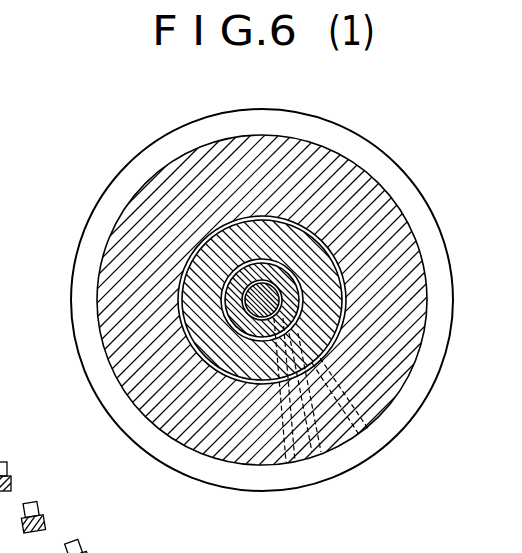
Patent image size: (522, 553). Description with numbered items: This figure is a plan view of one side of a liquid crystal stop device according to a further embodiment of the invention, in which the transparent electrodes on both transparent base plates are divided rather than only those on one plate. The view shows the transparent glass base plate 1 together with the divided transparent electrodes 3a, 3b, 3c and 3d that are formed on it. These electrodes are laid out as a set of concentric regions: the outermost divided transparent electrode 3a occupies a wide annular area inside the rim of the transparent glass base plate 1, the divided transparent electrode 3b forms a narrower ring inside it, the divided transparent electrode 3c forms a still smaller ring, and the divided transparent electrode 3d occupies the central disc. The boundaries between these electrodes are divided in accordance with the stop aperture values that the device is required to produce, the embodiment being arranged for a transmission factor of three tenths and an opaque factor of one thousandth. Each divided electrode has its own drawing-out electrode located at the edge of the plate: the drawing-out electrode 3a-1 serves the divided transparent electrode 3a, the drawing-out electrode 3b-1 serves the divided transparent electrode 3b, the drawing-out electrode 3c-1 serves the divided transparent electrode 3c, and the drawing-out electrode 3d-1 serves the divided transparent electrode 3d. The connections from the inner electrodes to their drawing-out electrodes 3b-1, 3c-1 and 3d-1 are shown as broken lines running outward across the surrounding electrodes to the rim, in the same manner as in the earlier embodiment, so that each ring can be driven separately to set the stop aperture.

The transparent glass base plate 1 is at (436, 266).
The divided transparent electrode 3a is at (132, 237).
The divided transparent electrode 3b is at (197, 288).
The divided transparent electrode 3c is at (232, 303).
The divided transparent electrode 3d is at (258, 306).
The drawing-out electrode 3a-1 is at (262, 492).
The drawing-out electrode 3b-1 is at (298, 492).
The drawing-out electrode 3c-1 is at (328, 480).
The drawing-out electrode 3d-1 is at (373, 453).